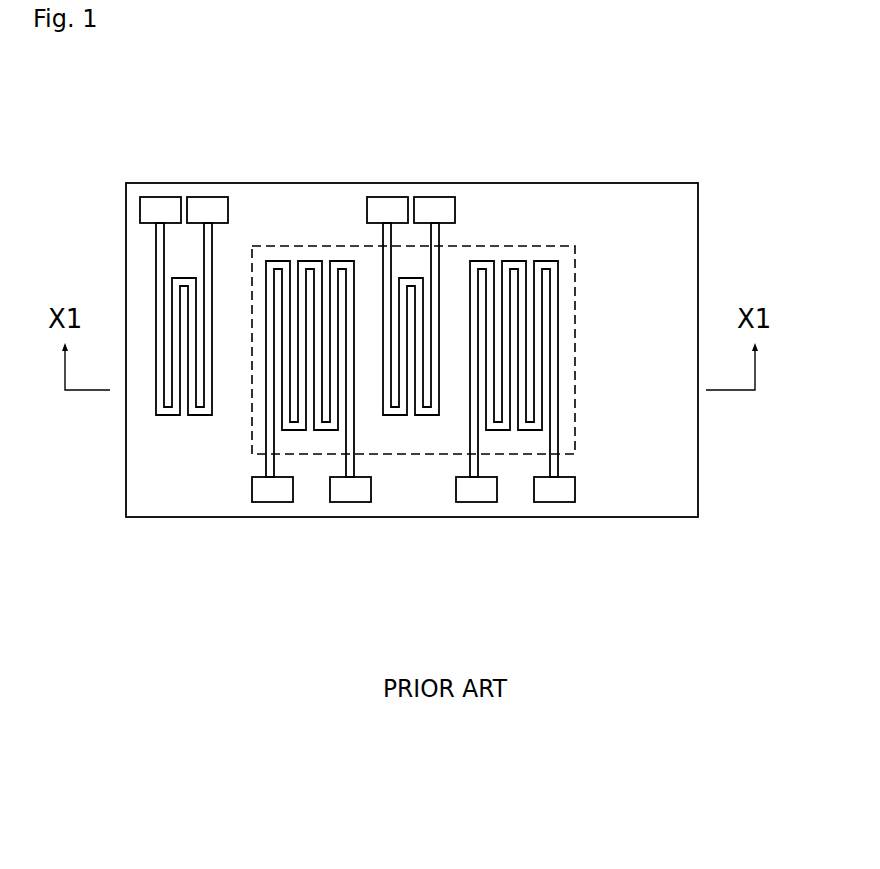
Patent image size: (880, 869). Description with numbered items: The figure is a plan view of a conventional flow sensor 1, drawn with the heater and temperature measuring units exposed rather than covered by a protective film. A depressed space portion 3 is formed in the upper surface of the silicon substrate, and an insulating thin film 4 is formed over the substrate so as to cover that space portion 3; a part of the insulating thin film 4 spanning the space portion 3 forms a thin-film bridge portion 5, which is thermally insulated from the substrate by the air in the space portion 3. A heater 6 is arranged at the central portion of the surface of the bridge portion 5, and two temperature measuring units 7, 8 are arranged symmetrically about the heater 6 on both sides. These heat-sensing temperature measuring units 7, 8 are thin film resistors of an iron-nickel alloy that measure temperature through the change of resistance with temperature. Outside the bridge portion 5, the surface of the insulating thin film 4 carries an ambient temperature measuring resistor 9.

The flow sensor 1 is at (672, 98).
The depressed space portion 3 is at (497, 245).
The insulating thin film 4 is at (623, 488).
The thin-film bridge portion 5 is at (427, 440).
The heater 6 is at (437, 315).
The temperature measuring unit 7 is at (300, 266).
The temperature measuring unit 8 is at (505, 312).
The ambient temperature measuring resistor 9 is at (168, 413).